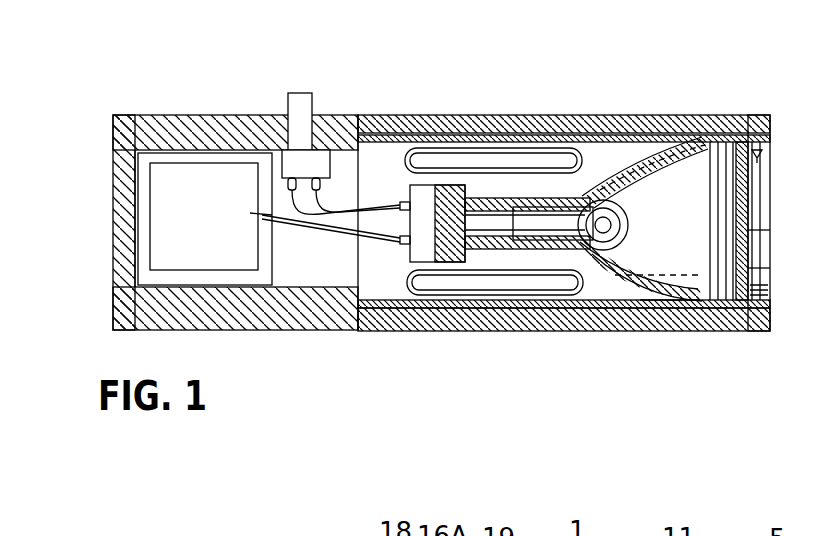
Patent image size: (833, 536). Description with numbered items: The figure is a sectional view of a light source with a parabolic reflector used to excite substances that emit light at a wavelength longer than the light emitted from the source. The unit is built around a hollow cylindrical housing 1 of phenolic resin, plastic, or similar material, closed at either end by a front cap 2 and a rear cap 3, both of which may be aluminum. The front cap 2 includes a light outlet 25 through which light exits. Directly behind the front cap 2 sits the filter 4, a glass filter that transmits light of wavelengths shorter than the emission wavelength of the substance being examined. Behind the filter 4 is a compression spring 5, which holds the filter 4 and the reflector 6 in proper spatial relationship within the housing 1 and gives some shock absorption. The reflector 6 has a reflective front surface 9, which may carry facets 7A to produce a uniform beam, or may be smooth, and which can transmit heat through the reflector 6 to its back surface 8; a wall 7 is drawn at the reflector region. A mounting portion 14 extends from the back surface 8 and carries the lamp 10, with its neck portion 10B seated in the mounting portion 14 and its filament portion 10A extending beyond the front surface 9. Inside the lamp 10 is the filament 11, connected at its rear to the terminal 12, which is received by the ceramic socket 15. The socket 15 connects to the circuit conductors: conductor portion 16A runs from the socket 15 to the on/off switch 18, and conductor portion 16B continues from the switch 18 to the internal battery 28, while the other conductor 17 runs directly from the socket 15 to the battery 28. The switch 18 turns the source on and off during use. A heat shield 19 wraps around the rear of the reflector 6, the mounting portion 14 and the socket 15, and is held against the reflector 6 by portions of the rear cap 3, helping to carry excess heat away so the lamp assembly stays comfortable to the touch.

The housing 1 is at (500, 116).
The front cap 2 is at (768, 115).
The rear cap 3 is at (113, 130).
The filter 4 is at (752, 272).
The compression spring 5 is at (720, 140).
The reflector 6 is at (745, 240).
The wall 7 is at (643, 330).
The facets 7A is at (748, 183).
The back surface 8 is at (602, 292).
The reflective front surface 9 is at (765, 290).
The lamp 10 is at (652, 210).
The filament portion 10A is at (628, 232).
The neck portion 10B is at (552, 296).
The filament 11 is at (597, 175).
The terminal 12 is at (484, 232).
The mounting portion 14 is at (522, 197).
The socket 15 is at (420, 263).
The conductor portion 16A is at (375, 200).
The conductor portion 16B is at (268, 200).
The conductor 17 is at (292, 240).
The on/off switch 18 is at (306, 92).
The heat shield 19 is at (412, 148).
The light outlet 25 is at (770, 156).
The internal battery 28 is at (162, 247).